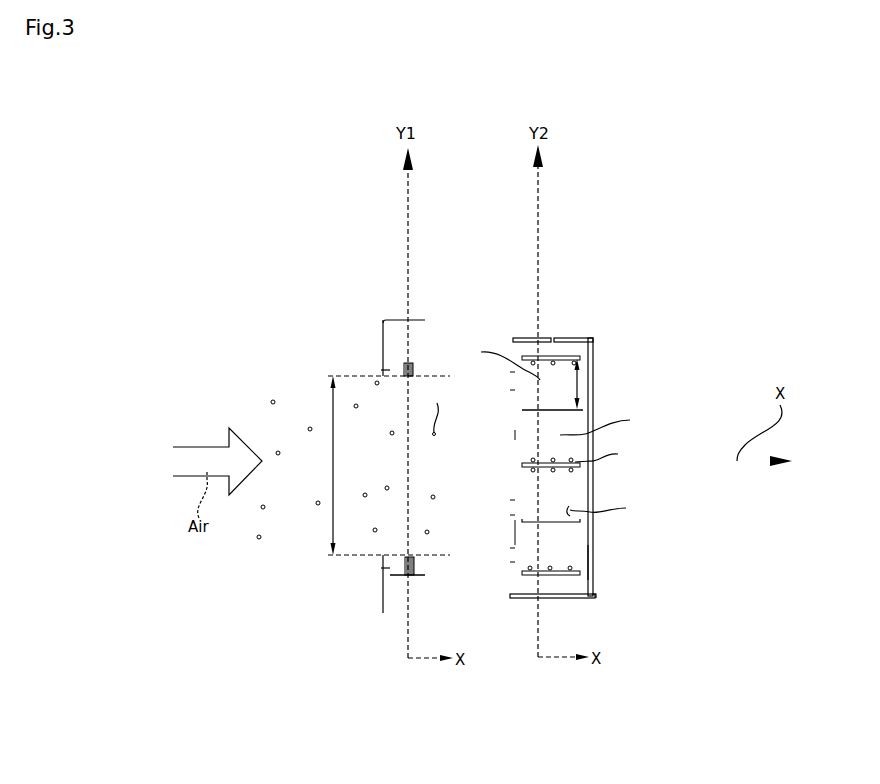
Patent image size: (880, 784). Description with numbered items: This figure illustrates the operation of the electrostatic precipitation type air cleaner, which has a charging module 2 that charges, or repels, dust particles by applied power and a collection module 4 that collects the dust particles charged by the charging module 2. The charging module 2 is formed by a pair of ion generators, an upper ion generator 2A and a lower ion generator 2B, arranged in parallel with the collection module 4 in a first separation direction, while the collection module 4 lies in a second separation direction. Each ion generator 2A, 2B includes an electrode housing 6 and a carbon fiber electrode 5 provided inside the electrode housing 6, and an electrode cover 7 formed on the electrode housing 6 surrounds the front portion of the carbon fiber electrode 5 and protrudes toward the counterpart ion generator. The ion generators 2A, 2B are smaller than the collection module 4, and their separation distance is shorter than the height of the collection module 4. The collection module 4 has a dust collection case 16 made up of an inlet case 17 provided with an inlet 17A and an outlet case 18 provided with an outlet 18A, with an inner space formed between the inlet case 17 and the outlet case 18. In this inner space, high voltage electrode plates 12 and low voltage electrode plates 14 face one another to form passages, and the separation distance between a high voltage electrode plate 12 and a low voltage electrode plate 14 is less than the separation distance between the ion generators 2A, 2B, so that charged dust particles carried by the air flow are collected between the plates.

The charging module 2 is at (312, 278).
The upper ion generator 2A is at (383, 320).
The lower ion generator 2B is at (383, 613).
The collection module 4 is at (595, 300).
The carbon fiber electrode 5 is at (405, 376).
The electrode housing 6 is at (383, 338).
The electrode cover 7 is at (383, 369).
The high voltage electrode plate 12 is at (522, 410).
The low voltage electrode plate 14 is at (520, 340).
The dust collection case 16 is at (600, 597).
The inlet case 17 is at (512, 598).
The inlet 17A is at (515, 562).
The outlet case 18 is at (594, 598).
The outlet 18A is at (593, 562).